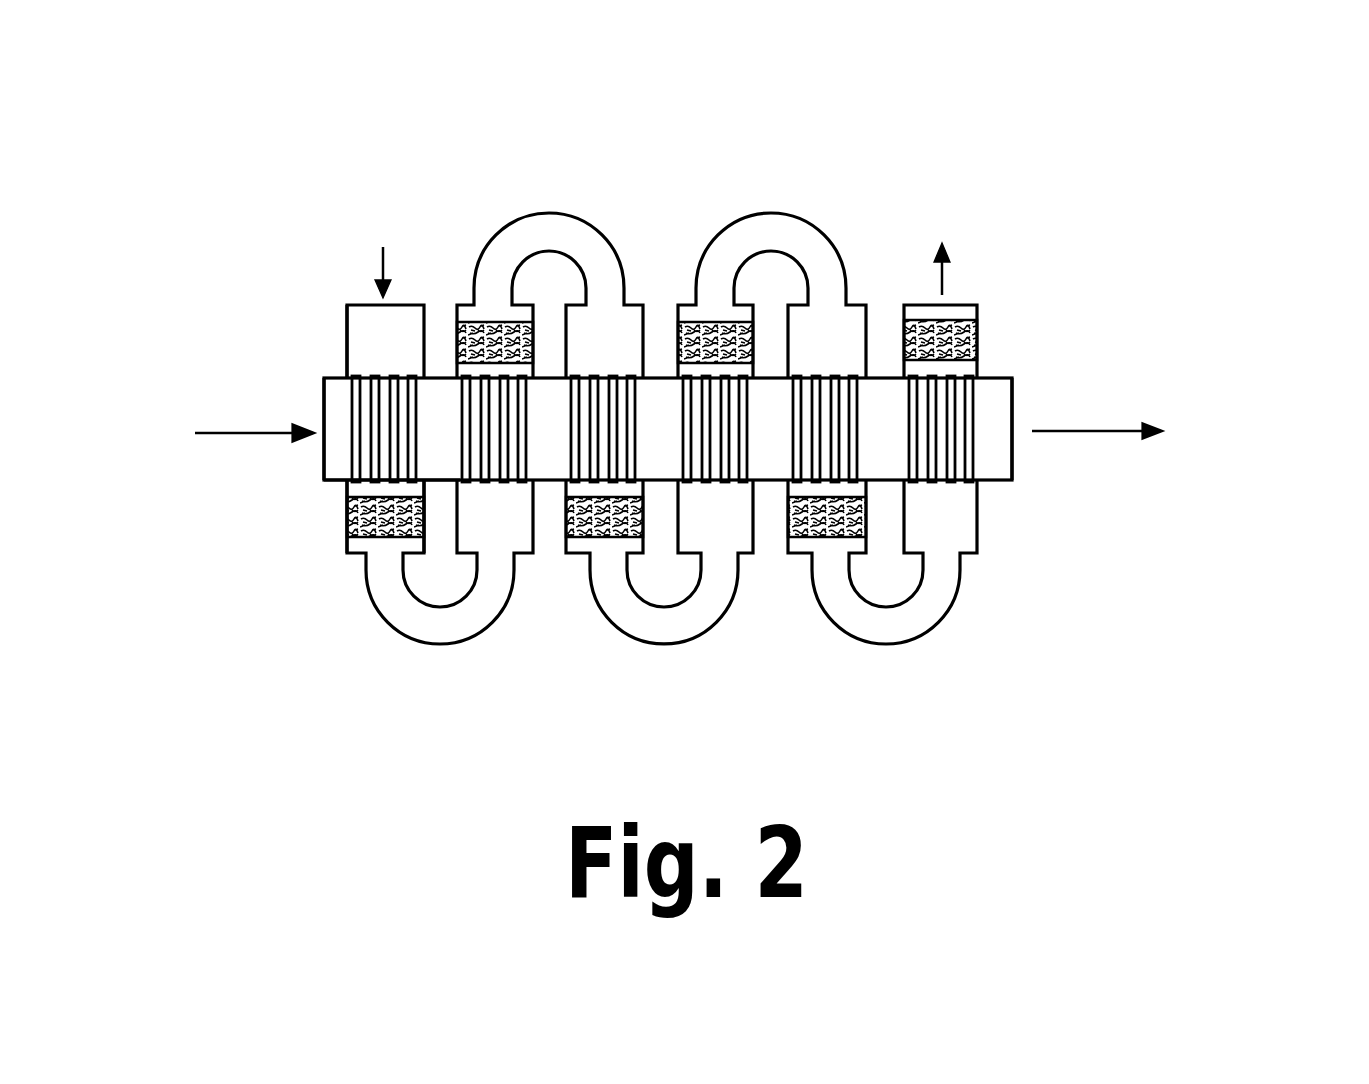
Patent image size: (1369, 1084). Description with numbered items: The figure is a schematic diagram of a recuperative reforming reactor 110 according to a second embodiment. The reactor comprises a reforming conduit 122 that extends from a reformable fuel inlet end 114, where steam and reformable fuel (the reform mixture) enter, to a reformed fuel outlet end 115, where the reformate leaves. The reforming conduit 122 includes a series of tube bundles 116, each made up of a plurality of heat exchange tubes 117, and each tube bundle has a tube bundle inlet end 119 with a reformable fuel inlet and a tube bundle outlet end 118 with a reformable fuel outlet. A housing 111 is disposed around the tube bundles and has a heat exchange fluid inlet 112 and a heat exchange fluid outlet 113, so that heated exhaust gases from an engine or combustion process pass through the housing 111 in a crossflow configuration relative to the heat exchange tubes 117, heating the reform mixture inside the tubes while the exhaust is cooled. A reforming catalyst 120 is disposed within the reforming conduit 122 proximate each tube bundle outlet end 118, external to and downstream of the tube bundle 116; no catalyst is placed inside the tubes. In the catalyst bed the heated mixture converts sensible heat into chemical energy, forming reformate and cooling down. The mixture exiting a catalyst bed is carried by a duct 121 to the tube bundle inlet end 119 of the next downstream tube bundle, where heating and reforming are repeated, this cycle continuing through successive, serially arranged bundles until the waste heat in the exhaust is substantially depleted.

The recuperative reforming reactor 110 is at (1150, 165).
The housing 111 is at (1012, 482).
The heat exchange fluid inlet 112 is at (322, 447).
The heat exchange fluid outlet 113 is at (1012, 453).
The reformable fuel inlet end 114 is at (361, 304).
The reformed fuel outlet end 115 is at (962, 305).
The tube bundle 116 is at (352, 455).
The heat exchange tubes 117 is at (353, 386).
The tube bundle outlet end 118 is at (350, 498).
The tube bundle inlet end 119 is at (376, 378).
The reforming catalyst 120 is at (466, 322).
The duct 121 is at (447, 646).
The reforming conduit 122 is at (347, 317).